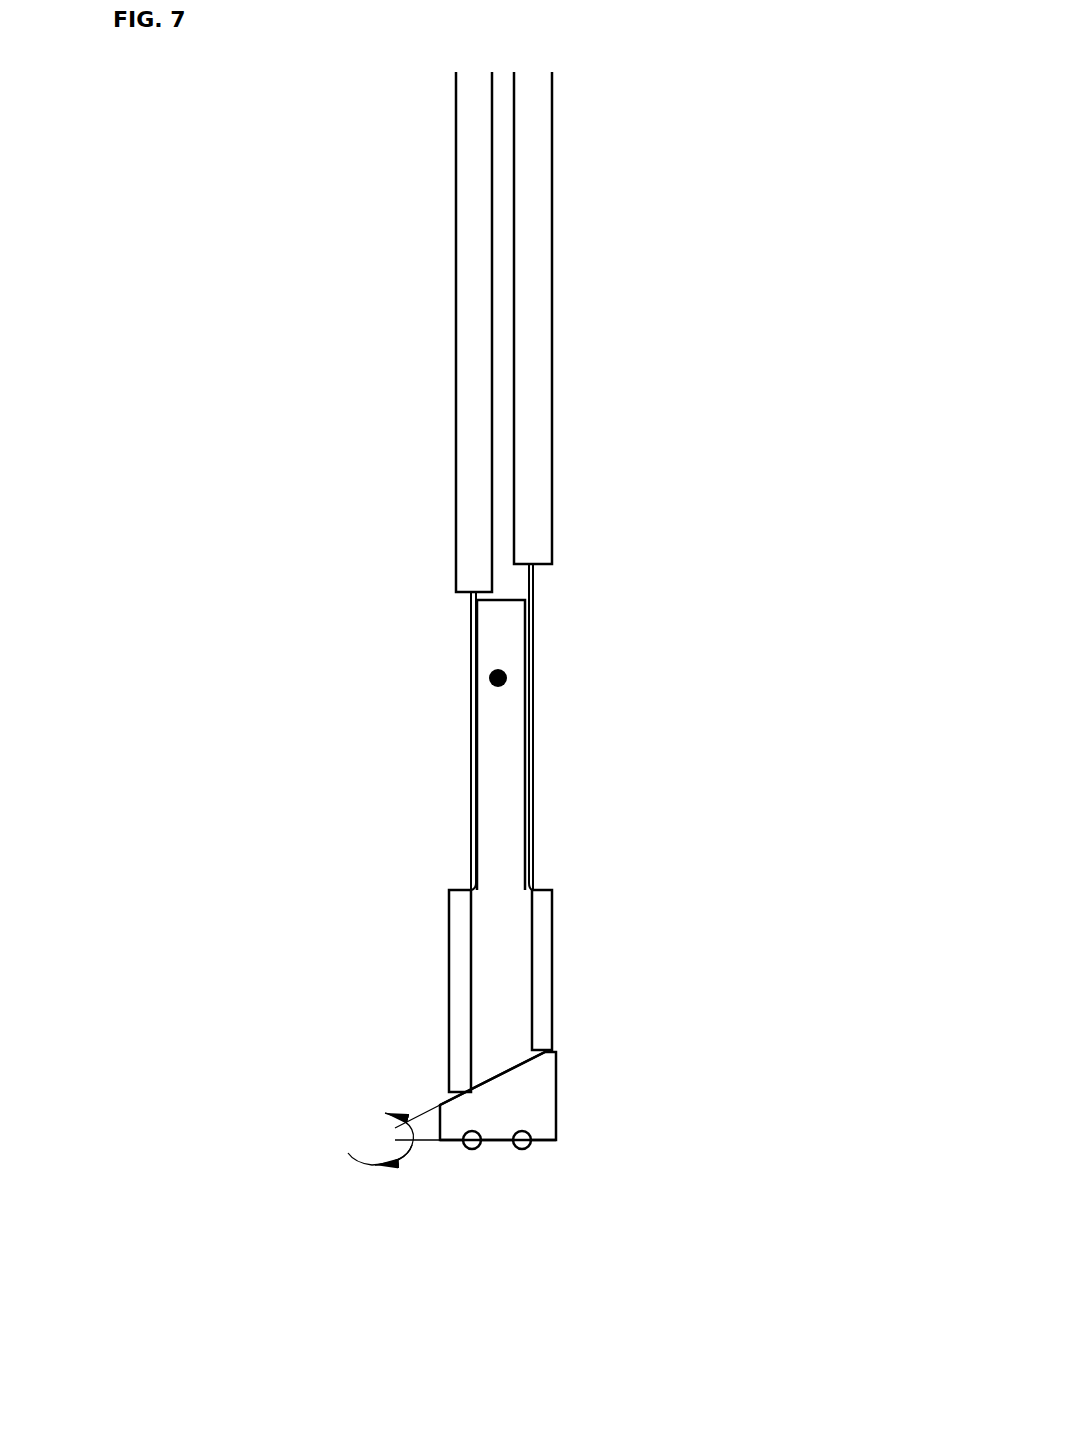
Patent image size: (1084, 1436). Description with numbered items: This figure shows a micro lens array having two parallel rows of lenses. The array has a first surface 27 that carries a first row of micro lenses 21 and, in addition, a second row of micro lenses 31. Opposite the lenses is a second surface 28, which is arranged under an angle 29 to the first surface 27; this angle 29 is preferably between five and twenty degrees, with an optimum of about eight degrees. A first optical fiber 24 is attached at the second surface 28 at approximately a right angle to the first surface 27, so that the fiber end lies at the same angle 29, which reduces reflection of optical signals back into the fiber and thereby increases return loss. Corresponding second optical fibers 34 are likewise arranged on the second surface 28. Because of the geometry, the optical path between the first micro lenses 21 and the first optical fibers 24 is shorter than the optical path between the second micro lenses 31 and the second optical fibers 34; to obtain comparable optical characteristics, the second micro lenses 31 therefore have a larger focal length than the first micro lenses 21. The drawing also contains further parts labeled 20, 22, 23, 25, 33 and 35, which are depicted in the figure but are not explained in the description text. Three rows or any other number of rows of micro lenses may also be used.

The foot piece 20 is at (556, 1096).
The micro lenses 21 is at (473, 1152).
The inner body 22 is at (490, 674).
The left lower sleeve 23 is at (450, 965).
The optical fiber 24 is at (470, 722).
The left outer tube 25 is at (456, 422).
The first surface 27 is at (556, 1141).
The second surface 28 is at (450, 1097).
The angle 29 is at (394, 1118).
The second row of micro lenses 31 is at (523, 1152).
The right lower sleeve 33 is at (552, 934).
The second optical fibers 34 is at (534, 716).
The right outer tube 35 is at (552, 399).